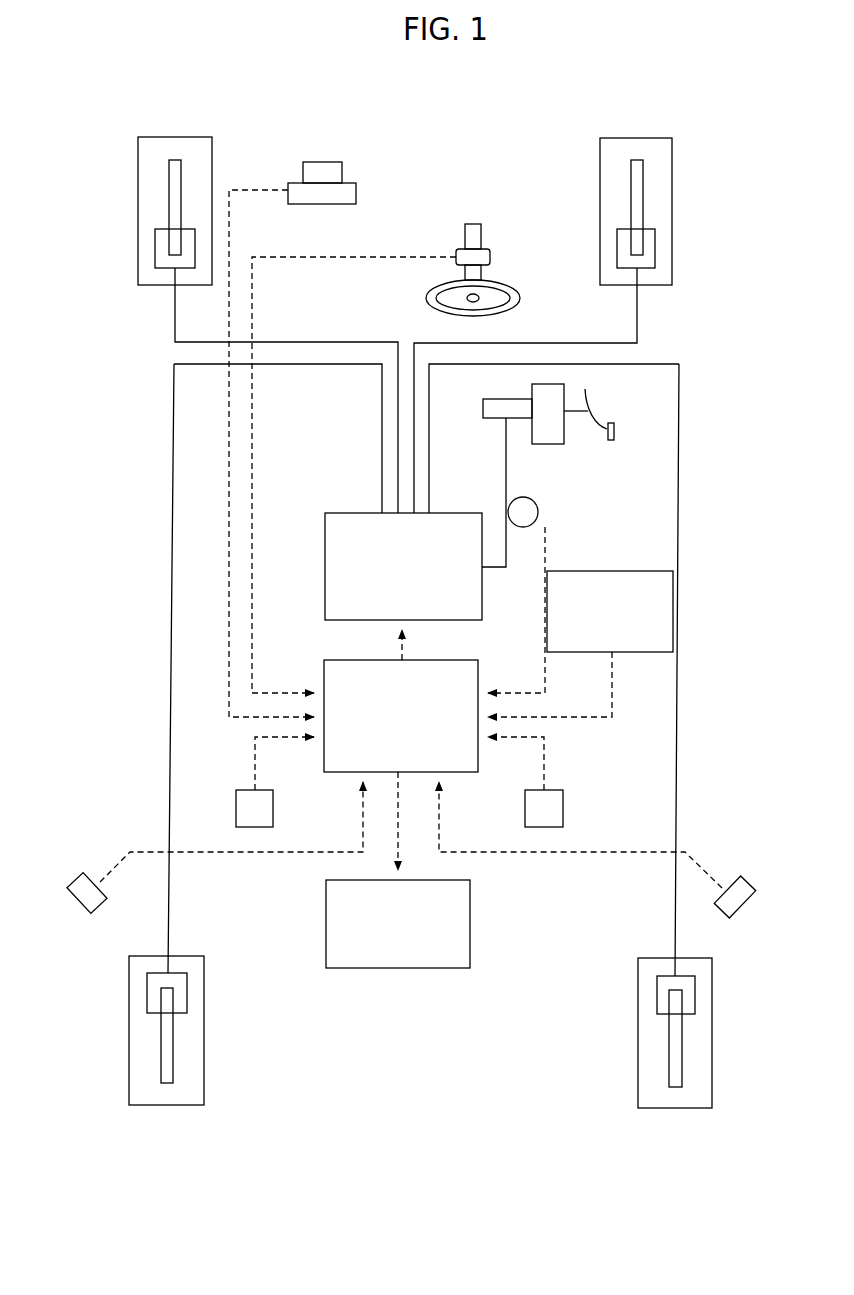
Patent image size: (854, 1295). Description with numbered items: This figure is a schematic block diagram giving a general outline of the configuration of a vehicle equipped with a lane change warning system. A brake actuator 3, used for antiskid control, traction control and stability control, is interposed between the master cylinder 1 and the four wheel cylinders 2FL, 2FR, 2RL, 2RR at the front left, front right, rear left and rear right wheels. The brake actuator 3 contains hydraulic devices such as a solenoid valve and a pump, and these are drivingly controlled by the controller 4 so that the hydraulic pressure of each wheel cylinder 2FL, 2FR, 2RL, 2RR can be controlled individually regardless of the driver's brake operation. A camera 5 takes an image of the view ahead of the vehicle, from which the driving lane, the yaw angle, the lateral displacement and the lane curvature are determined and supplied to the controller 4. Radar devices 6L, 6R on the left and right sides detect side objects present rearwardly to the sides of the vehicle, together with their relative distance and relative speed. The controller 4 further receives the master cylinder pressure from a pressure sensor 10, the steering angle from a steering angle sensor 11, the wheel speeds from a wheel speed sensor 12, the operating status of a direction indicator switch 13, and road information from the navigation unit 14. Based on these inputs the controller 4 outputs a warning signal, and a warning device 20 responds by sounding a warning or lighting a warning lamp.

The master cylinder 1 is at (483, 409).
The wheel cylinder 2FL is at (155, 250).
The wheel cylinder 2FR is at (655, 247).
The wheel cylinder 2RL is at (147, 990).
The wheel cylinder 2RR is at (695, 995).
The brake actuator 3 is at (345, 513).
The controller 4 is at (345, 660).
The camera 5 is at (329, 162).
The radar device 6L is at (80, 873).
The radar device 6R is at (750, 873).
The pressure sensor 10 is at (537, 503).
The steering angle sensor 11 is at (490, 256).
The wheel speed sensor 12 is at (273, 808).
The direction indicator switch 13 is at (563, 808).
The navigation unit 14 is at (595, 571).
The warning device 20 is at (470, 925).